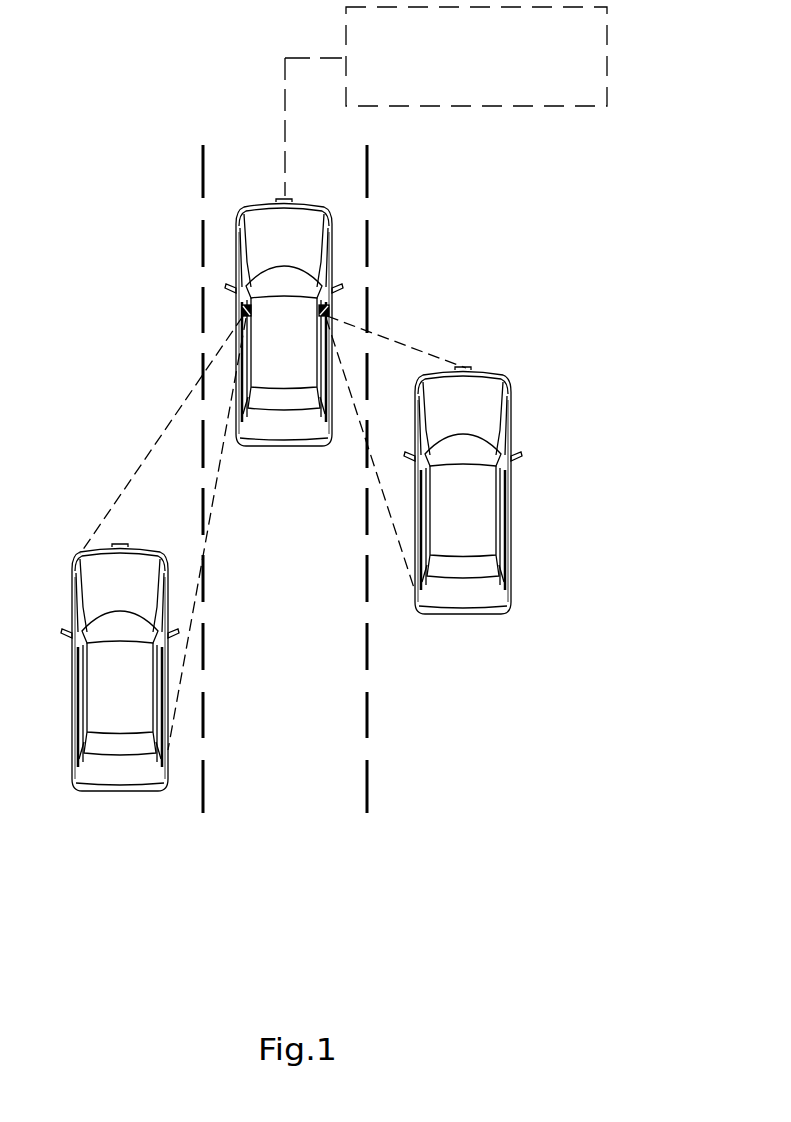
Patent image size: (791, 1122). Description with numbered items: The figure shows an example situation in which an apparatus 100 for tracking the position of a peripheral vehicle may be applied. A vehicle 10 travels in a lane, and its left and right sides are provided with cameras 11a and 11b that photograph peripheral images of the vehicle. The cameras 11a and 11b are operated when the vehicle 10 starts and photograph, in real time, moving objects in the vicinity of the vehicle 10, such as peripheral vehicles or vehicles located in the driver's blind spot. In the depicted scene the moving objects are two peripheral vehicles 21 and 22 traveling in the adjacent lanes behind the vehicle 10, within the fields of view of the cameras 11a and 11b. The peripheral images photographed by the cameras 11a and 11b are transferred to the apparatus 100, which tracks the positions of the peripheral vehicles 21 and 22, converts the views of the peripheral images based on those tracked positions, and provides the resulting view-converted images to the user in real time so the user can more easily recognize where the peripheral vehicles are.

The apparatus for tracking a position of a peripheral vehicle 100 is at (607, 58).
The vehicle 10 is at (284, 448).
The camera 11a is at (242, 310).
The camera 11b is at (330, 310).
The peripheral vehicle 21 is at (117, 792).
The peripheral vehicle 22 is at (462, 615).